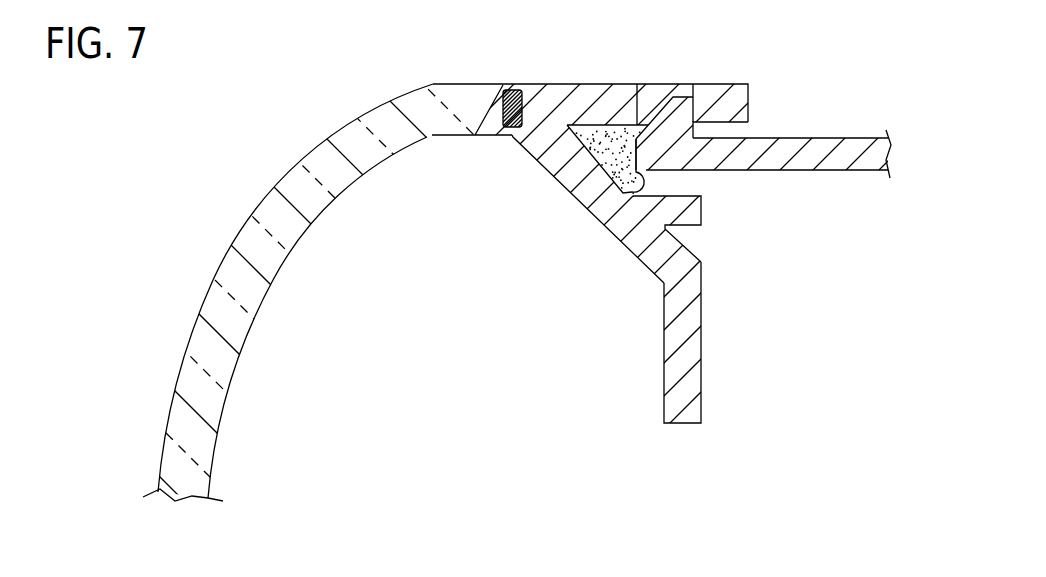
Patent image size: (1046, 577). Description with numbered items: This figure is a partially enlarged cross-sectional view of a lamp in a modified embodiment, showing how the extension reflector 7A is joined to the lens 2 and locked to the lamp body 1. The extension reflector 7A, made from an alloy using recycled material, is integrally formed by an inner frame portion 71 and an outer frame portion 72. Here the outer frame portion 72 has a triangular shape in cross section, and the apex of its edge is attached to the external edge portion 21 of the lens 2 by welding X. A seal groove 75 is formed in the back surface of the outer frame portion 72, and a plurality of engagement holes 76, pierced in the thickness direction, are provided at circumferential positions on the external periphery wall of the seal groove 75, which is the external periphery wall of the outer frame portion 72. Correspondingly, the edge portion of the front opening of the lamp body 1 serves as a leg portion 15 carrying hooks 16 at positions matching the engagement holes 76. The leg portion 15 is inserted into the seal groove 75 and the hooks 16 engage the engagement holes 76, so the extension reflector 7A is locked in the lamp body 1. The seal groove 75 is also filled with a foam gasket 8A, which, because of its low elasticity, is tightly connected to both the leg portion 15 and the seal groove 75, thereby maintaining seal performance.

The lamp body 1 is at (823, 160).
The lens 2 is at (218, 305).
The edge portion of the lens 21 is at (435, 115).
The welding X is at (503, 87).
The extension reflector 7A is at (660, 287).
The inner frame portion 71 is at (690, 397).
The foam gasket 8A is at (590, 143).
The seal groove 75 is at (621, 131).
The engagement holes 76 is at (658, 87).
The outer frame portion 72 is at (723, 83).
The hooks 16 is at (697, 107).
The leg portion 15 is at (690, 157).